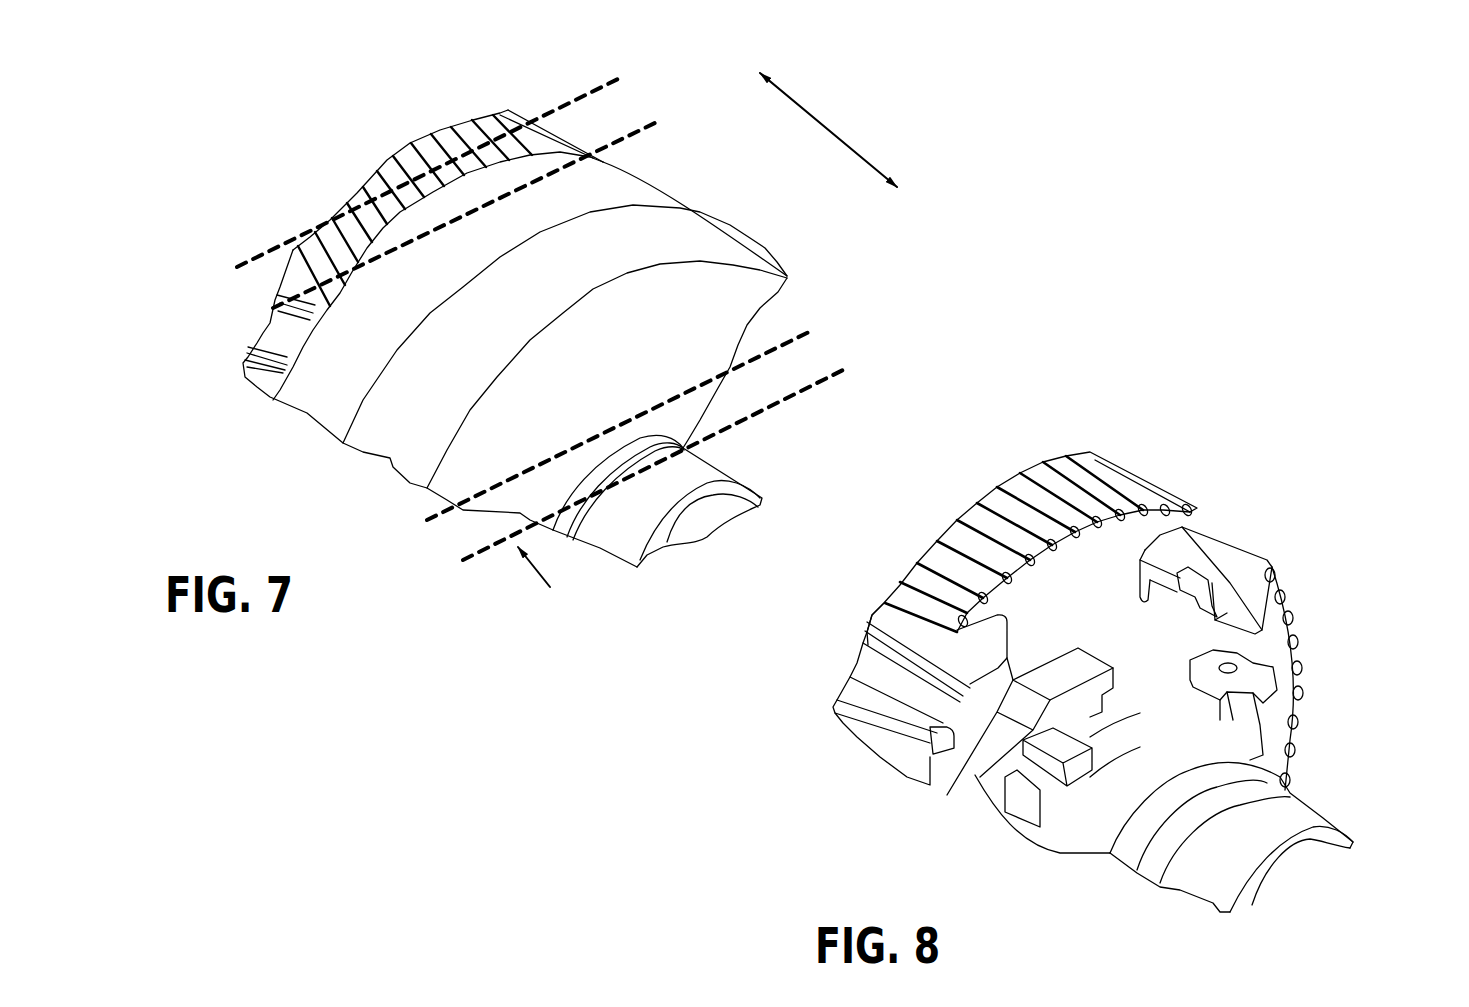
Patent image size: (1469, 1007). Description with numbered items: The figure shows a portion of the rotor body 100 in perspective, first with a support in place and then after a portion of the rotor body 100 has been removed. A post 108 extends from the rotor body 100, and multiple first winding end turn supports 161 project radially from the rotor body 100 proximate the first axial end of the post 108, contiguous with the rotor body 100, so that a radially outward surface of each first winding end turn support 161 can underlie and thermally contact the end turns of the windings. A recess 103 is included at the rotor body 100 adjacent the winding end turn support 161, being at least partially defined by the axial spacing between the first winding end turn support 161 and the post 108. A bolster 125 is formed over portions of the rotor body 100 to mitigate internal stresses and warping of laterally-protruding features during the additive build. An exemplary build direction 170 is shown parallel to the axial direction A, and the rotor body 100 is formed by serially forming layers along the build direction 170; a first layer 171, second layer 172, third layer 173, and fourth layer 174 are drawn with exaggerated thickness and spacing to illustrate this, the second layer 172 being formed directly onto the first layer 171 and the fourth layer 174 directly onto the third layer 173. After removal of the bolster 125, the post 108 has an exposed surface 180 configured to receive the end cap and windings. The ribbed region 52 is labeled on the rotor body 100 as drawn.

In FIG. 7, the shell segment 52 is at (515, 302).
In FIG. 8, the shell segment 52 is at (1078, 656).
In FIG. 7, the rotor body 100 is at (504, 302).
In FIG. 8, the rotor body 100 is at (1078, 656).
In FIG. 8, the recess 103 is at (1063, 647).
In FIG. 7, the post 108 is at (392, 156).
In FIG. 8, the post 108 is at (1077, 493).
In FIG. 7, the bolster 125 is at (663, 205).
In FIG. 8, the first winding end turn support 161 is at (1147, 660).
In FIG. 7, the build direction 170 is at (532, 570).
In FIG. 7, the first layer 171 is at (800, 393).
In FIG. 7, the second layer 172 is at (797, 337).
In FIG. 7, the third layer 173 is at (638, 128).
In FIG. 7, the fourth layer 174 is at (603, 85).
In FIG. 8, the exposed surface 180 is at (1115, 600).
In FIG. 7, the axial direction A is at (837, 130).